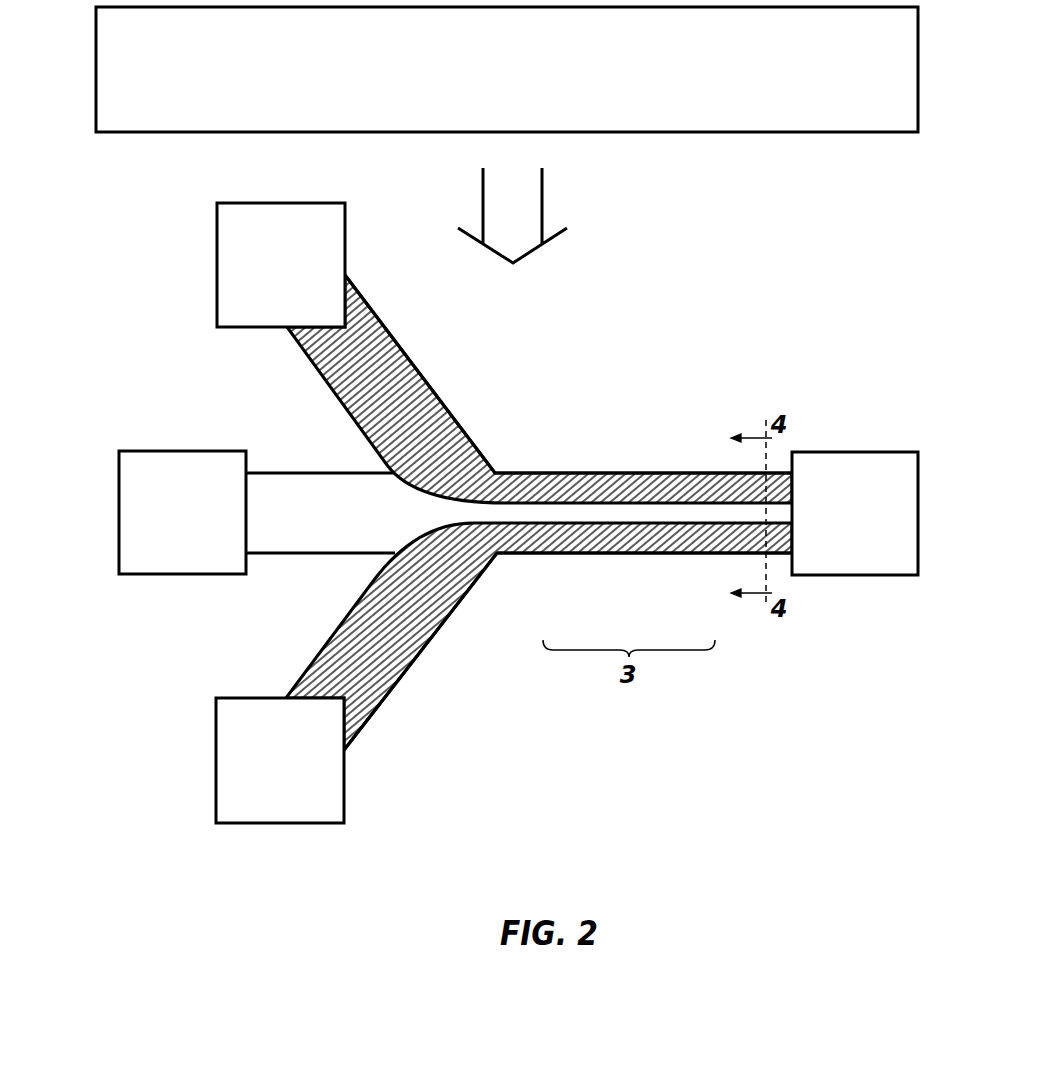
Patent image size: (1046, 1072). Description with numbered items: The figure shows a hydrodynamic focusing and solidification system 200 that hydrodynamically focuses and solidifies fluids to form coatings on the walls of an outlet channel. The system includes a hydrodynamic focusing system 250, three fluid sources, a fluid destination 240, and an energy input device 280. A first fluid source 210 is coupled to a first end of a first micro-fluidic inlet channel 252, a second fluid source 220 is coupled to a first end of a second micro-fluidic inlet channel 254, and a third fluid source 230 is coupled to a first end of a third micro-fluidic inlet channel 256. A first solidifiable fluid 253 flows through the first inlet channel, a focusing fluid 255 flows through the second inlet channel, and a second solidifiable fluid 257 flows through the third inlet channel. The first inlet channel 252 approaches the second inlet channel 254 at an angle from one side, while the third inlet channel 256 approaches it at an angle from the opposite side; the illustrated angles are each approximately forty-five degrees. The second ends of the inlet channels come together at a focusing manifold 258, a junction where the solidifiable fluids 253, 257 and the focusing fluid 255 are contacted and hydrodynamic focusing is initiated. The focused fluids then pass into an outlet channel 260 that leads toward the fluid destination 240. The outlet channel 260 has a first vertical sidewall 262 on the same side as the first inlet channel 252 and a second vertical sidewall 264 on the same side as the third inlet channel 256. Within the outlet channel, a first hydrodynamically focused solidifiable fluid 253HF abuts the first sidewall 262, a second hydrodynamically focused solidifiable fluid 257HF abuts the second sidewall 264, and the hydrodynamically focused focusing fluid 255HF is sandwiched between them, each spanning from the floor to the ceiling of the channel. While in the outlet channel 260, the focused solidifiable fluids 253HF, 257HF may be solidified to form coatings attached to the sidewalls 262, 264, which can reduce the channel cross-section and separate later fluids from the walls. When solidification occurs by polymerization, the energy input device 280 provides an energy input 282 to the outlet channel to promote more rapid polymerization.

The hydrodynamic focusing and solidification system 200 is at (125, 194).
The first fluid source 210 is at (261, 275).
The second fluid source 220 is at (163, 522).
The third fluid source 230 is at (260, 768).
The fluid destination 240 is at (836, 521).
The hydrodynamic focusing system 250 is at (660, 281).
The first micro-fluidic inlet channel 252 is at (412, 362).
The solidifiable fluid 253 is at (373, 412).
The second micro-fluidic inlet channel 254 is at (297, 553).
The focusing fluid 255 is at (332, 521).
The third micro-fluidic inlet channel 256 is at (433, 636).
The solidifiable fluid 257 is at (370, 632).
The focusing manifold 258 is at (505, 443).
The outlet channel 260 is at (637, 380).
The first vertical sidewall 262 is at (590, 473).
The second vertical sidewall 264 is at (606, 553).
The first hydrodynamically focused solidifiable fluid 253HF is at (680, 487).
The hydrodynamically focused focusing fluid 255HF is at (547, 519).
The second hydrodynamically focused solidifiable fluid 257HF is at (684, 543).
The energy input device 280 is at (493, 76).
The energy input 282 is at (542, 200).